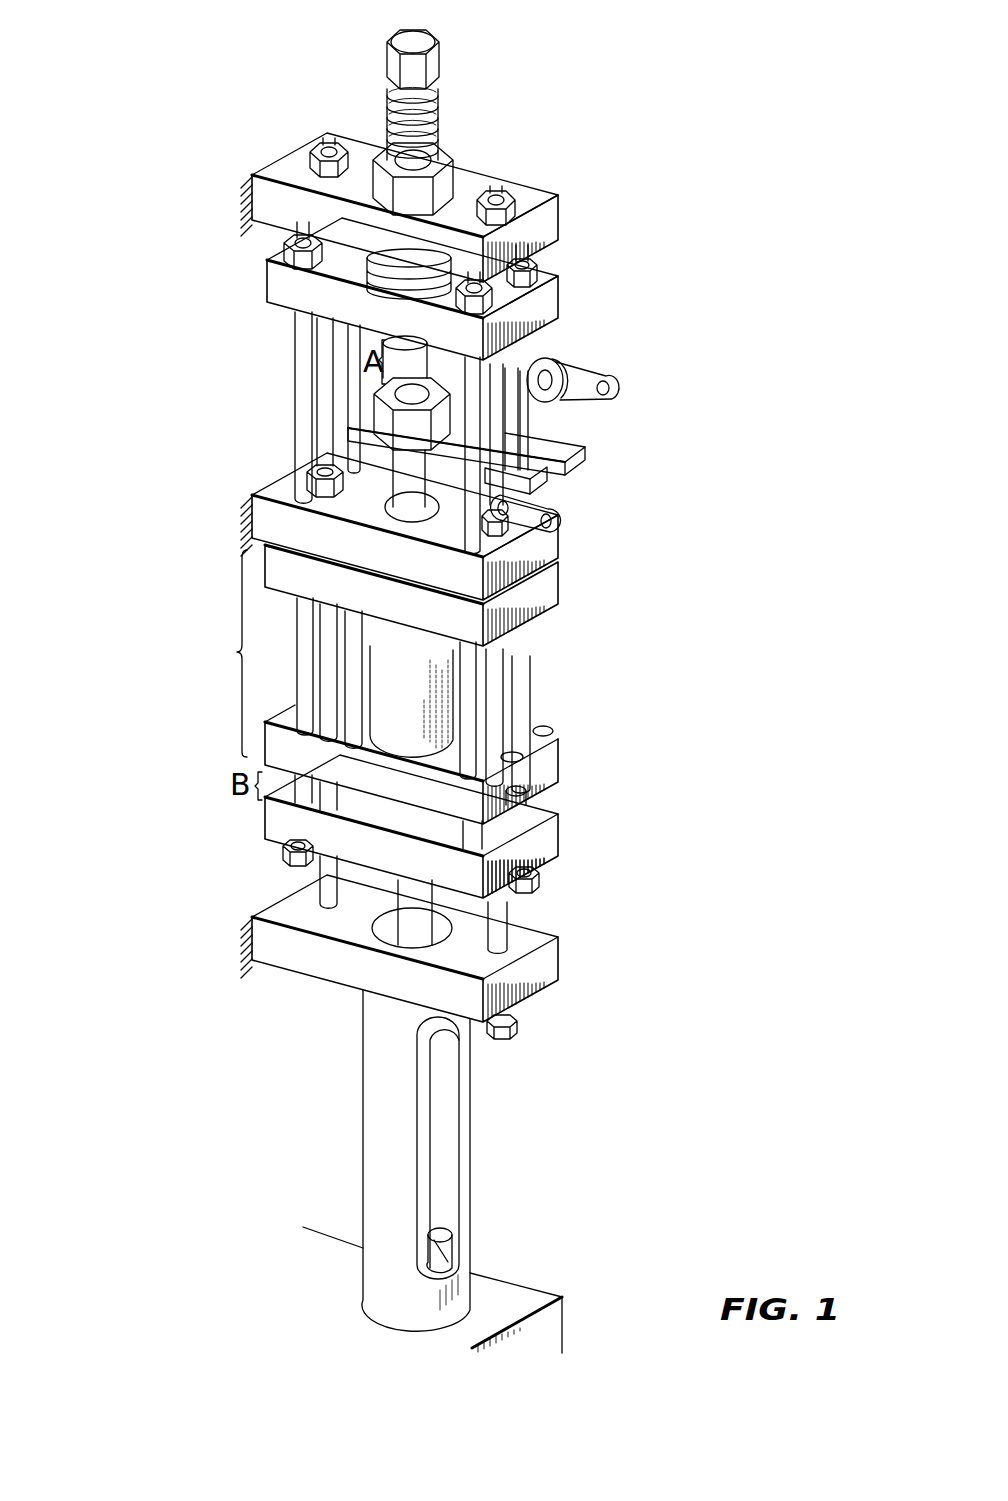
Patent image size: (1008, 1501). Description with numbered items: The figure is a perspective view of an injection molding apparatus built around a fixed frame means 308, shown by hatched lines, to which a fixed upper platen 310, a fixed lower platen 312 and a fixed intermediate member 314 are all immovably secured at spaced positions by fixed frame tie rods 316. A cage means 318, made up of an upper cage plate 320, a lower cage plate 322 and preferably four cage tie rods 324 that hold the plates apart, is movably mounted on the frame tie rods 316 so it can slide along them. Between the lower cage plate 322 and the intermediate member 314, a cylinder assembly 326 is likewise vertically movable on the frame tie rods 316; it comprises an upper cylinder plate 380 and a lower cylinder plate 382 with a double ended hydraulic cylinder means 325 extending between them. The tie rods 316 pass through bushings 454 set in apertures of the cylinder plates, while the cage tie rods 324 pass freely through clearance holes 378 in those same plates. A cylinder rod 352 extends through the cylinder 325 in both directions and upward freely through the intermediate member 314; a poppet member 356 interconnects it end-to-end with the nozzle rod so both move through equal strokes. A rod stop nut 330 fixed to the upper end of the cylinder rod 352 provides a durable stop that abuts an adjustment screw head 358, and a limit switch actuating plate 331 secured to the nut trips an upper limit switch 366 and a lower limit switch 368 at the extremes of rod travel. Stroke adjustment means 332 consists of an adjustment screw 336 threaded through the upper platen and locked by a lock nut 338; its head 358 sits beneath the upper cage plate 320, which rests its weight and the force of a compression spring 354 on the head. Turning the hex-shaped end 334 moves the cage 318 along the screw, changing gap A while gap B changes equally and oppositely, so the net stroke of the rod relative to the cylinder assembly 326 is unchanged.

The frame means 308 is at (238, 209).
The fixed upper platen 310 is at (392, 239).
The fixed lower platen 312 is at (385, 979).
The fixed intermediate member 314 is at (385, 559).
The fixed frame tie rods 316 is at (328, 672).
The cage means 318 is at (548, 303).
The upper cage plate 320 is at (397, 324).
The lower cage plate 322 is at (385, 854).
The cage tie rods 324 is at (350, 635).
The hydraulic cylinder means 325 is at (432, 684).
The cylinder assembly 326 is at (216, 653).
The rod stop nut 330 is at (384, 416).
The limit switch actuating plate 331 is at (562, 447).
The adjustment means 332 is at (452, 81).
The adjustment screw hex-shaped end means 334 is at (441, 32).
The adjustment screw 336 is at (440, 120).
The lock nut 338 is at (446, 174).
The cylinder rod 352 is at (427, 1122).
The compression spring 354 is at (368, 272).
The poppet member 356 is at (447, 1257).
The adjustment screw head 358 is at (390, 337).
The upper limit switch 366 is at (617, 374).
The lower limit switch 368 is at (560, 522).
The clearance holes 378 is at (543, 730).
The upper cylinder plate 380 is at (387, 604).
The lower cylinder plate 382 is at (382, 784).
The bushings 454 is at (510, 755).